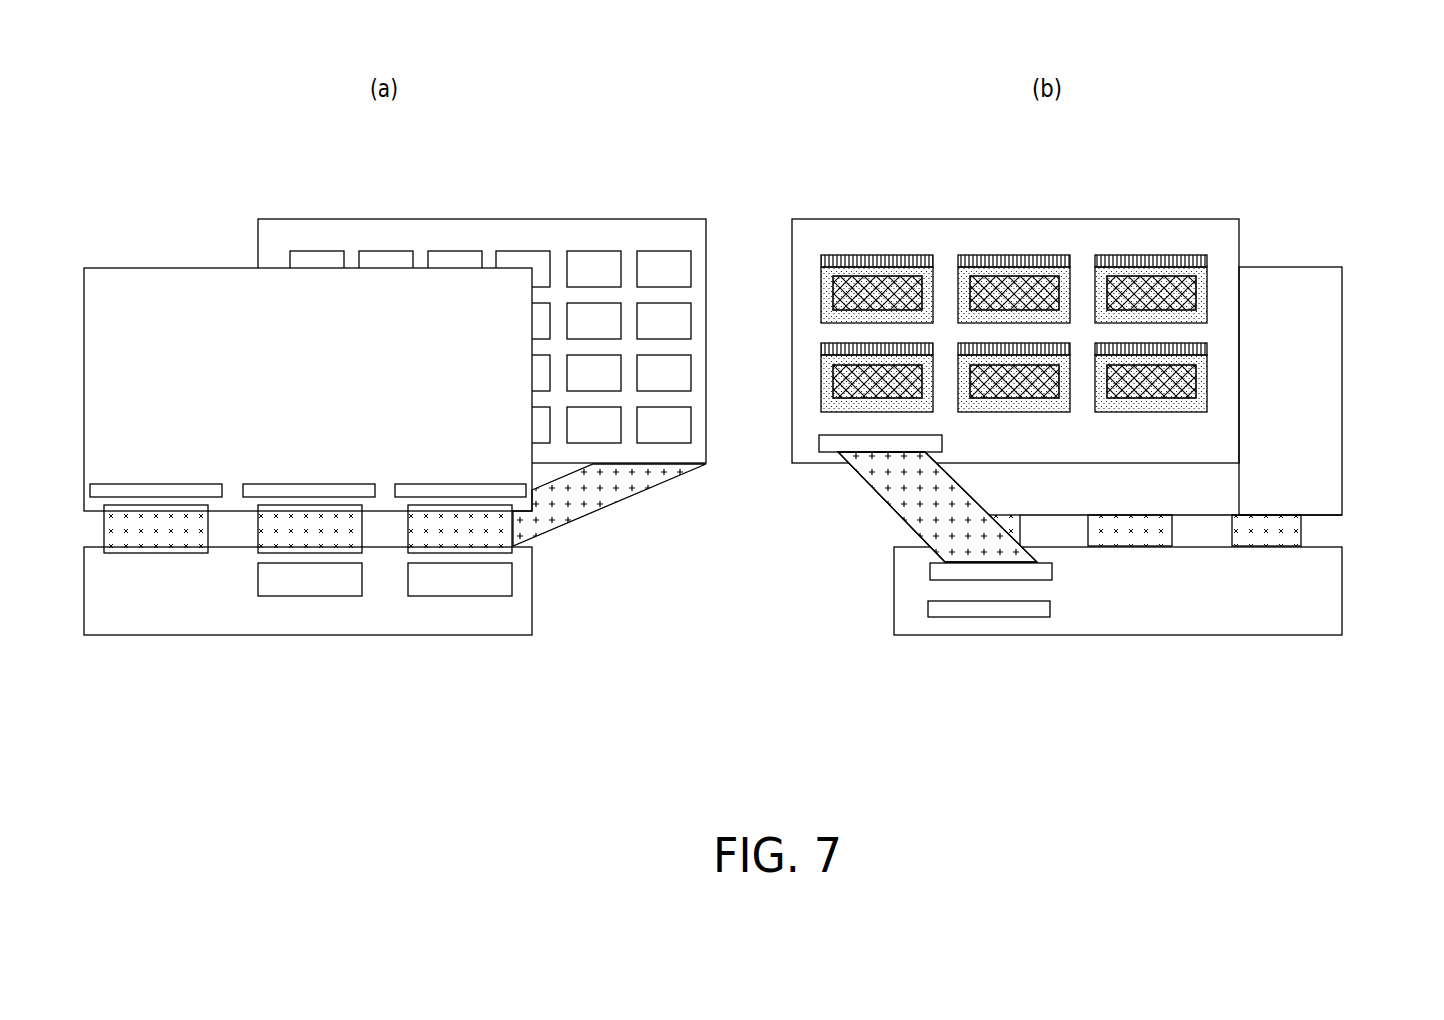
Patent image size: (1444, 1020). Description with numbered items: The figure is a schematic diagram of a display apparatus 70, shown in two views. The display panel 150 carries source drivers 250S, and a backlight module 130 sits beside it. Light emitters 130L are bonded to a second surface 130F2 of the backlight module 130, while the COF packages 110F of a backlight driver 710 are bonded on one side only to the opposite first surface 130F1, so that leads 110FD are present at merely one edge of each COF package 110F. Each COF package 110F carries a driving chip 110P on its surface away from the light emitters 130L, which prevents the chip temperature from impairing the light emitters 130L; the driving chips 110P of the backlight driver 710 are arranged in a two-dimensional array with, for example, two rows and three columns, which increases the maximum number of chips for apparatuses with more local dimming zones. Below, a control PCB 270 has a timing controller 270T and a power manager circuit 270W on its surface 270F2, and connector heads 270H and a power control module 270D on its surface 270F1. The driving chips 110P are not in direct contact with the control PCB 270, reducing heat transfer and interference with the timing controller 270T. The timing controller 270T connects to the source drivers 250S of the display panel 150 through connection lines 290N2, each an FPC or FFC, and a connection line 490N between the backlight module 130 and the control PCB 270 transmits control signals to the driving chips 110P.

The display apparatus 70 is at (157, 122).
The display panel 150 is at (138, 272).
The backlight module 130 is at (818, 152).
The light emitters 130L is at (316, 258).
The second surface of the backlight module 130F2 is at (668, 227).
The first surface of the backlight module 130F1 is at (805, 227).
The source drivers 250S is at (156, 490).
The connection lines 290N2 is at (152, 545).
The timing controller 270T is at (275, 590).
The power manager circuit 270W is at (425, 590).
The surface of the control PCB 270F2 is at (525, 608).
The surface of the control PCB 270F1 is at (905, 610).
The control PCB 270 is at (853, 720).
The connection line 490N is at (598, 488).
The leads 110FD is at (834, 258).
The backlight driver 710 is at (1182, 178).
The driving chip 110P is at (1017, 276).
The COF package 110F is at (1200, 296).
The power control module 270D is at (944, 610).
The connector heads 270H is at (1010, 575).